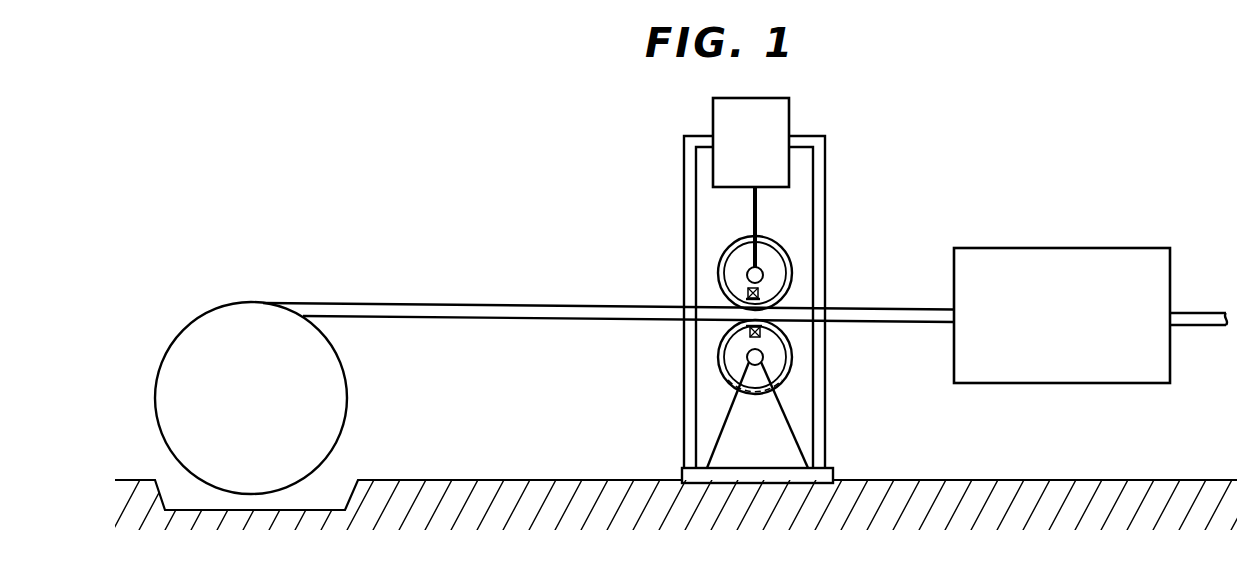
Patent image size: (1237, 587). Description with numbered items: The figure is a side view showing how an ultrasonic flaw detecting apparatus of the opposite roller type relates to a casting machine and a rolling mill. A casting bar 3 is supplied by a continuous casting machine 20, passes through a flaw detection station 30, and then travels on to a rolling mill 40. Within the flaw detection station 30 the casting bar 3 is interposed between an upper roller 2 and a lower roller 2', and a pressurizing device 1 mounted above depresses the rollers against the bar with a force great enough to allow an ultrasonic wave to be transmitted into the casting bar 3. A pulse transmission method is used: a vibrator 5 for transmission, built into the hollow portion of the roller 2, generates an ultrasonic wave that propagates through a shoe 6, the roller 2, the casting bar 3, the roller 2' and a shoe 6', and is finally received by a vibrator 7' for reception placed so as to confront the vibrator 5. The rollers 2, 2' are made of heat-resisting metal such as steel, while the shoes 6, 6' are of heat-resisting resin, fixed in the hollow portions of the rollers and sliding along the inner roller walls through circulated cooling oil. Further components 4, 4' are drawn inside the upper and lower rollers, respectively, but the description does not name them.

The pressurizing device 1 is at (776, 121).
The roller 2 is at (785, 266).
The casting bar 3 is at (583, 306).
The upper roller shaft 4 is at (768, 235).
The vibrator for transmission 5 is at (763, 291).
The shoe 6 is at (702, 286).
The roller 2' is at (792, 358).
The lower roller ring 4' is at (795, 357).
The shoe 6' is at (705, 342).
The vibrator for reception 7' is at (707, 372).
The continuous casting machine 20 is at (337, 380).
The flaw detection station 30 is at (836, 190).
The rolling mill 40 is at (1055, 265).